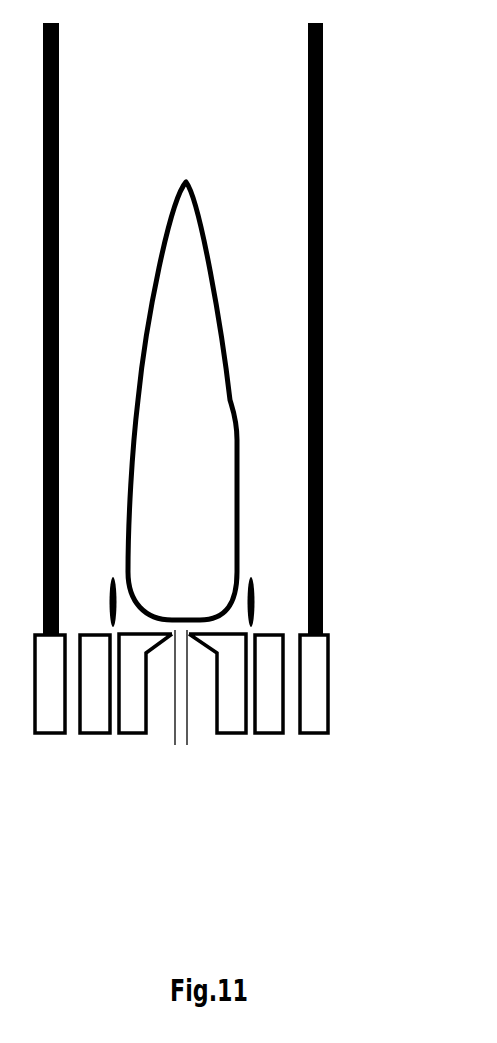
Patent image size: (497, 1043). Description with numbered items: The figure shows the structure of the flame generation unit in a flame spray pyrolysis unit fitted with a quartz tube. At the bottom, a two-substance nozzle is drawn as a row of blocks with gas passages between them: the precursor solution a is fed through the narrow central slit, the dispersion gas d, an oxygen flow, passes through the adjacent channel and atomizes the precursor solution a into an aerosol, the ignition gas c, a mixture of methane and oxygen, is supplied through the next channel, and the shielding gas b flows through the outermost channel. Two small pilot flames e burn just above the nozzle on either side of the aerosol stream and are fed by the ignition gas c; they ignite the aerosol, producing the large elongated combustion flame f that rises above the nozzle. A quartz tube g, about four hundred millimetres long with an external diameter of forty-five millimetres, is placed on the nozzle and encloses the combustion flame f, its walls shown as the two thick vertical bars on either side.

The precursor solution a is at (121, 718).
The shielding gas b is at (293, 736).
The ignition gas c is at (253, 736).
The dispersion gas d is at (205, 736).
The pilot flame e is at (113, 574).
The combustion flame f is at (204, 224).
The quartz tube g is at (323, 313).